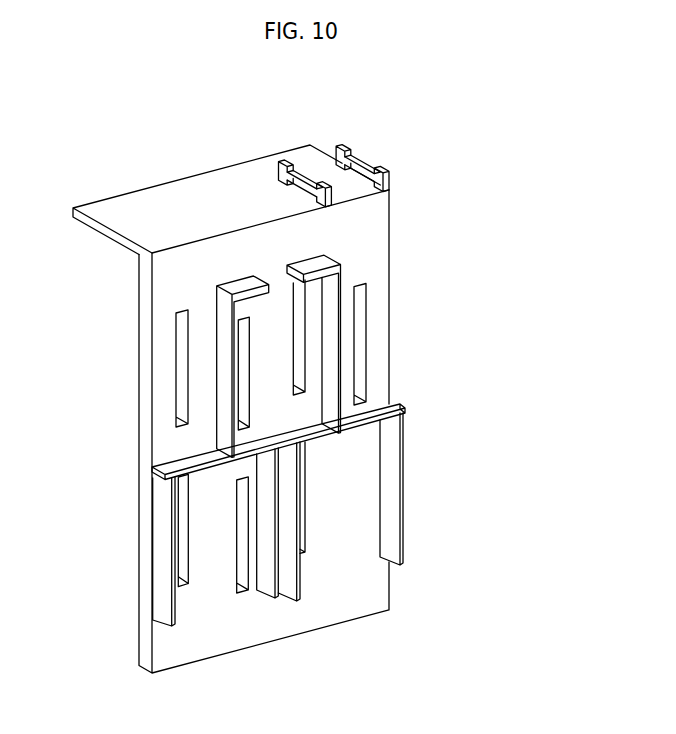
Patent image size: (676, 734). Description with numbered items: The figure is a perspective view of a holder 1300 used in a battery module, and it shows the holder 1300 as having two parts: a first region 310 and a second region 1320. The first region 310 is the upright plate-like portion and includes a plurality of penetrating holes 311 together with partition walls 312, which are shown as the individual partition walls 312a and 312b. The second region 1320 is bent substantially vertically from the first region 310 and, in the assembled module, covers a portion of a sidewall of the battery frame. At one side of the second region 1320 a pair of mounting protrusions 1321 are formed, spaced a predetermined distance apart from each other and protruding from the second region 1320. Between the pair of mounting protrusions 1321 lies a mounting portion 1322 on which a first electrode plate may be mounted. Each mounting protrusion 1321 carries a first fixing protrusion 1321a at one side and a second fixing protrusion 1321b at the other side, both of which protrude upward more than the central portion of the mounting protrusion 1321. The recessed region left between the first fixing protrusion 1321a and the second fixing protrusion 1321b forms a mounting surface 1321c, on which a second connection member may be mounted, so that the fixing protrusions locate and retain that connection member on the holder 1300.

The holder 1300 is at (93, 174).
The second region 1320 is at (202, 182).
The mounting portion 1322 is at (335, 180).
The mounting protrusion 1321 is at (492, 95).
The first fixing protrusion 1321a is at (382, 165).
The second fixing protrusion 1321b is at (347, 143).
The mounting surface 1321c is at (365, 158).
The first region 310 is at (382, 353).
The penetrating hole 311 is at (364, 326).
The partition walls 312 is at (505, 403).
The partition wall 312a is at (398, 403).
The partition wall 312b is at (402, 469).